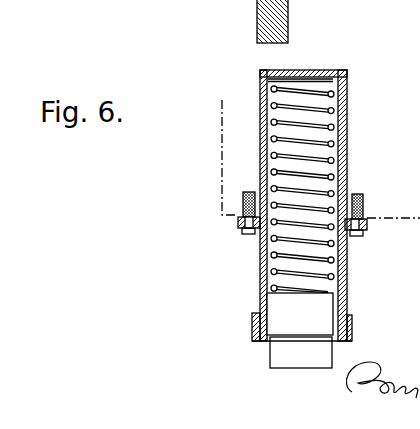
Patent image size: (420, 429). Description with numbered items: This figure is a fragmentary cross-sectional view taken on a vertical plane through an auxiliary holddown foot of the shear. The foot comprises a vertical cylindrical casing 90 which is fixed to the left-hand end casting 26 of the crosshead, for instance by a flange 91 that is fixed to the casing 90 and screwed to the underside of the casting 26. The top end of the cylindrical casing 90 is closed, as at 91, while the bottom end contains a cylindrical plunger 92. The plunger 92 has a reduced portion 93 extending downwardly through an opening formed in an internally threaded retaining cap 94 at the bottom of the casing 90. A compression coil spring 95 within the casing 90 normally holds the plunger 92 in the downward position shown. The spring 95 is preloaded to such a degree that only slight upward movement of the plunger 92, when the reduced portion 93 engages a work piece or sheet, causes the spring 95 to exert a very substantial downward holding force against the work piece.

The left-hand end casting 26 is at (230, 193).
The vertical cylindrical casing 90 is at (346, 131).
The flange 91 is at (303, 72).
The cylindrical plunger 92 is at (333, 322).
The reduced portion 93 is at (277, 353).
The internally threaded retaining cap 94 is at (252, 325).
The compression coil spring 95 is at (346, 188).